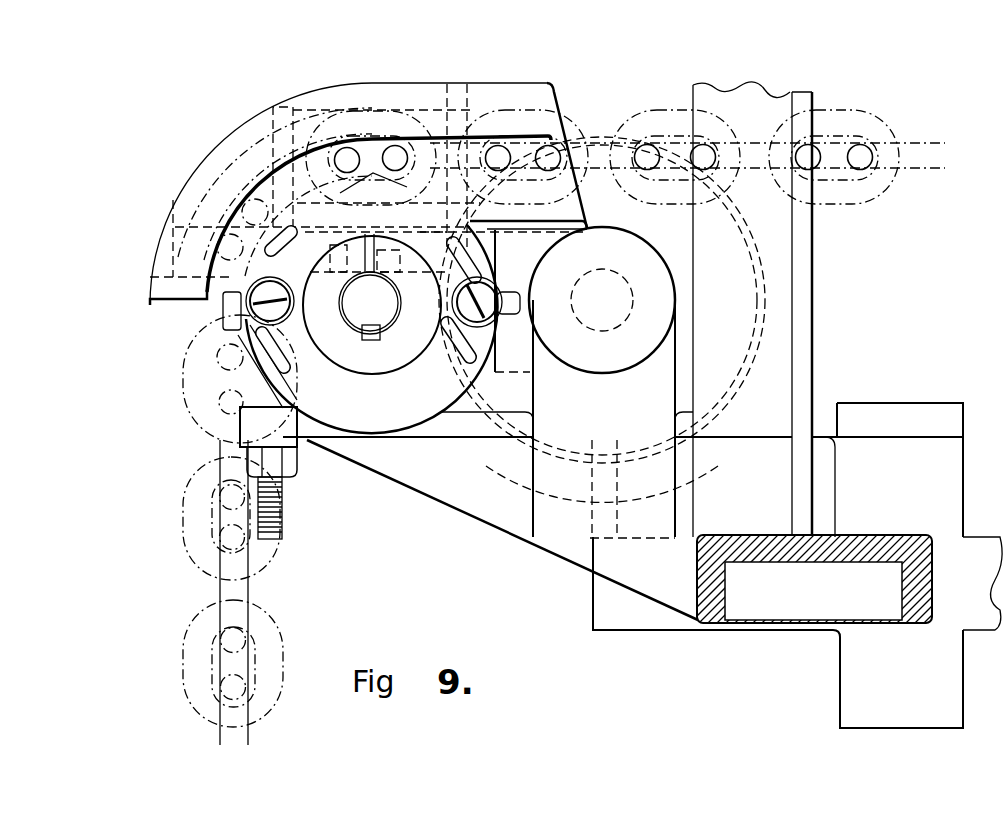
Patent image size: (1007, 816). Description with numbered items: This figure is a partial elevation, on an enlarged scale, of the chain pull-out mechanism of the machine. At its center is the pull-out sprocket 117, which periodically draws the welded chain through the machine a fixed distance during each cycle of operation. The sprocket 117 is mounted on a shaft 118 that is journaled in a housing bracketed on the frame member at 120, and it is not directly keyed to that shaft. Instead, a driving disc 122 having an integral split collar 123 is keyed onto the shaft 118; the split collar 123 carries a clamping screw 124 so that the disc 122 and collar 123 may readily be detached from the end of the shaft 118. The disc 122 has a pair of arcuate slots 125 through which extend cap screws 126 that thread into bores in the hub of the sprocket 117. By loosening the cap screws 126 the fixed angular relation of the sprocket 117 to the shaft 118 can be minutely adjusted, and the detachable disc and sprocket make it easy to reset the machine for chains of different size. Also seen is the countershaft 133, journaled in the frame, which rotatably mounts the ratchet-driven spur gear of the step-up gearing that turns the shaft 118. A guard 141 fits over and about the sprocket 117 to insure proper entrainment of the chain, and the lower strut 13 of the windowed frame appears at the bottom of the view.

The lower strut 13 is at (714, 612).
The pull-out sprocket 117 is at (437, 440).
The shaft 118 is at (353, 305).
The bracket 120 is at (470, 500).
The driving disc 122 is at (332, 340).
The split collar 123 is at (253, 395).
The clamping screw 124 is at (330, 249).
The arcuate slots 125 is at (200, 290).
The cap screws 126 is at (498, 290).
The countershaft 133 is at (625, 300).
The guard 141 is at (373, 92).